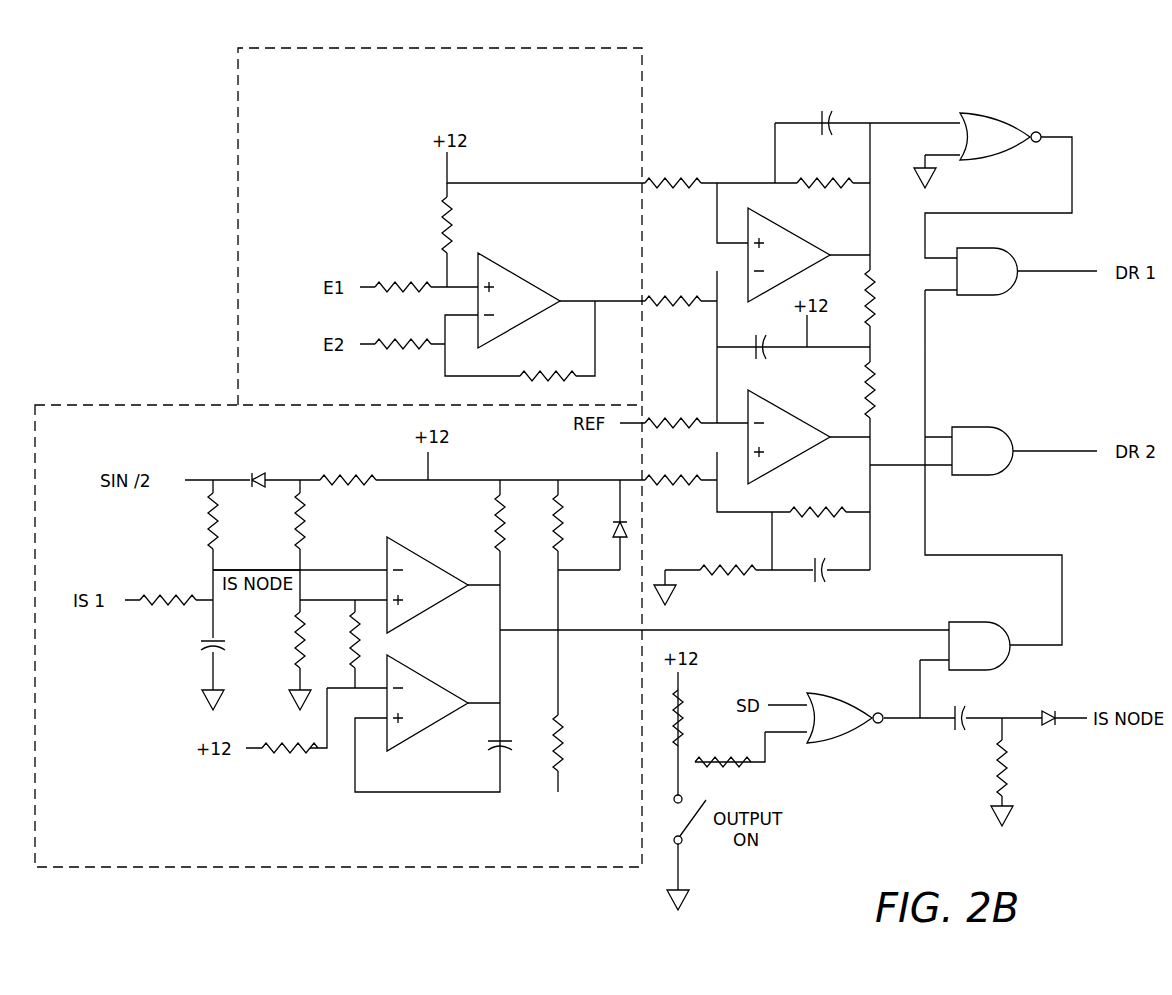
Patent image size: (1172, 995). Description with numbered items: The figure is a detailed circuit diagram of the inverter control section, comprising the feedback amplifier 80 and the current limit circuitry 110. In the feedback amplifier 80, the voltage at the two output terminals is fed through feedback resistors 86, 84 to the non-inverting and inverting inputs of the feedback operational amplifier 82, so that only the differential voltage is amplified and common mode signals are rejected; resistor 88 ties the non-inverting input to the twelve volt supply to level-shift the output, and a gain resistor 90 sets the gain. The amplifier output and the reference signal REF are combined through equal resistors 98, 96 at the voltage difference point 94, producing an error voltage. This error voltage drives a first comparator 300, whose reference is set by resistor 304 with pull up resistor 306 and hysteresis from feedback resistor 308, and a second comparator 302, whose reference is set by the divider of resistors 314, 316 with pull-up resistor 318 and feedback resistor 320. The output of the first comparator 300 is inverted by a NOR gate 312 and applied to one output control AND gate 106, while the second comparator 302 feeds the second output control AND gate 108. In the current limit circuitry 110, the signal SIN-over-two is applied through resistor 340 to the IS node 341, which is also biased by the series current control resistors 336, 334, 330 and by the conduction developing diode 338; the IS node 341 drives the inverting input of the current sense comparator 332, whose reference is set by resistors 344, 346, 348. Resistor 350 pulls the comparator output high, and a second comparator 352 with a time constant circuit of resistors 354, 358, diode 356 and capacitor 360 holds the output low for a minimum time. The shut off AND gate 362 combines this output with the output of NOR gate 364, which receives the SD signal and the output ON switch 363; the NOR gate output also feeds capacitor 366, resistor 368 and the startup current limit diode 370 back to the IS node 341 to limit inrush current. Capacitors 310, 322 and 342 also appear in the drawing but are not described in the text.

The feedback amplifier 80 is at (458, 48).
The current limit circuitry 110 is at (68, 405).
The feedback operational amplifier 82 is at (514, 272).
The feedback resistor 84 is at (407, 352).
The feedback resistor 86 is at (402, 285).
The resistor 88 is at (447, 224).
The feedback or gain resistor 90 is at (540, 382).
The voltage difference point 94 is at (706, 336).
The resistor 96 is at (672, 423).
The resistor 98 is at (670, 300).
The first comparator 300 is at (802, 242).
The second comparator 302 is at (804, 424).
The resistor 304 is at (681, 183).
The pull up resistor 306 is at (877, 286).
The feedback resistor 308 is at (840, 182).
The capacitor 310 is at (834, 116).
The NOR gate 312 is at (999, 114).
The resistor 314 is at (670, 486).
The resistor 316 is at (722, 578).
The pull-up resistor 318 is at (873, 390).
The feedback resistor 320 is at (826, 512).
The capacitor 322 is at (826, 574).
The output control AND gate 106 is at (1016, 256).
The second output control AND gate 108 is at (1011, 433).
The current control resistor 330 is at (174, 595).
The current sense comparator 332 is at (425, 557).
The current control resistor 334 is at (306, 528).
The current control resistor 336 is at (360, 480).
The conduction developing diode 338 is at (265, 473).
The resistor 340 is at (219, 528).
The IS node 341 is at (218, 570).
The capacitor 342 is at (200, 640).
The resistor 344 is at (295, 753).
The resistor 346 is at (354, 650).
The resistor 348 is at (296, 650).
The resistor 350 is at (506, 497).
The second comparator 352 is at (445, 666).
The resistor 354 is at (554, 517).
The diode 356 is at (616, 542).
The resistor 358 is at (561, 751).
The capacitor 360 is at (486, 745).
The shut off AND gate 362 is at (991, 624).
The output ON switch 363 is at (676, 818).
The NOR gate 364 is at (853, 696).
The capacitor 366 is at (952, 733).
The resistor 368 is at (1008, 770).
The startup current limit diode 370 is at (1046, 710).